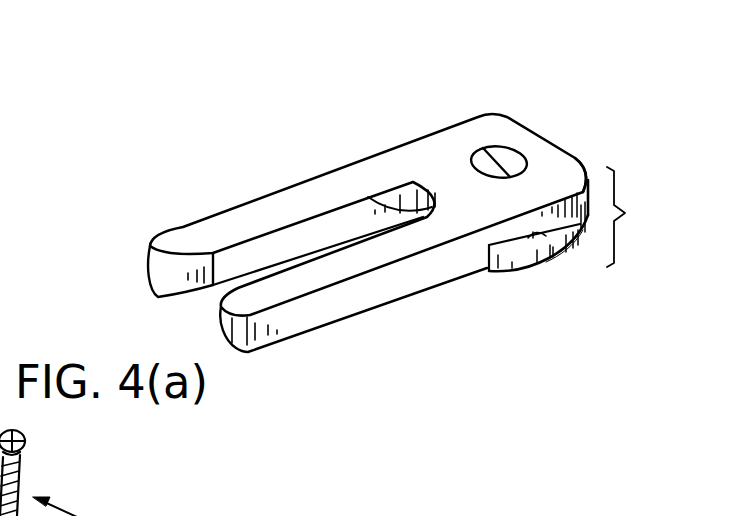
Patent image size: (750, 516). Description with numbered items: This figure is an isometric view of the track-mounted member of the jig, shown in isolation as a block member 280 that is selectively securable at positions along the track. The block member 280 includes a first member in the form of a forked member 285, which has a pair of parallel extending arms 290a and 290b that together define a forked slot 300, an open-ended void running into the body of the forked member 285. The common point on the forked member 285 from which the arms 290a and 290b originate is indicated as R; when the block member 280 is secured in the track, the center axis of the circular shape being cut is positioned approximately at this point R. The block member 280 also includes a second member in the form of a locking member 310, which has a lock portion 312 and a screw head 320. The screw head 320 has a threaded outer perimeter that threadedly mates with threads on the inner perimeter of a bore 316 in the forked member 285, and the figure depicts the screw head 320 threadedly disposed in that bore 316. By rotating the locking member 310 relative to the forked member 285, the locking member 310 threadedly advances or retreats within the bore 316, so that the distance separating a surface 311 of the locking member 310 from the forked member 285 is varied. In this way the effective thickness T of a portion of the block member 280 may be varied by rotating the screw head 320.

The block member 280 is at (383, 150).
The forked member 285 is at (562, 172).
The arm 290a is at (174, 226).
The arm 290b is at (313, 320).
The forked slot 300 is at (196, 308).
The locking member 310 is at (563, 273).
The surface of the locking member 311 is at (538, 232).
The lock portion 312 is at (563, 248).
The bore 316 is at (483, 148).
The screw head 320 is at (515, 157).
The common point R is at (378, 203).
The effective thickness T is at (640, 217).